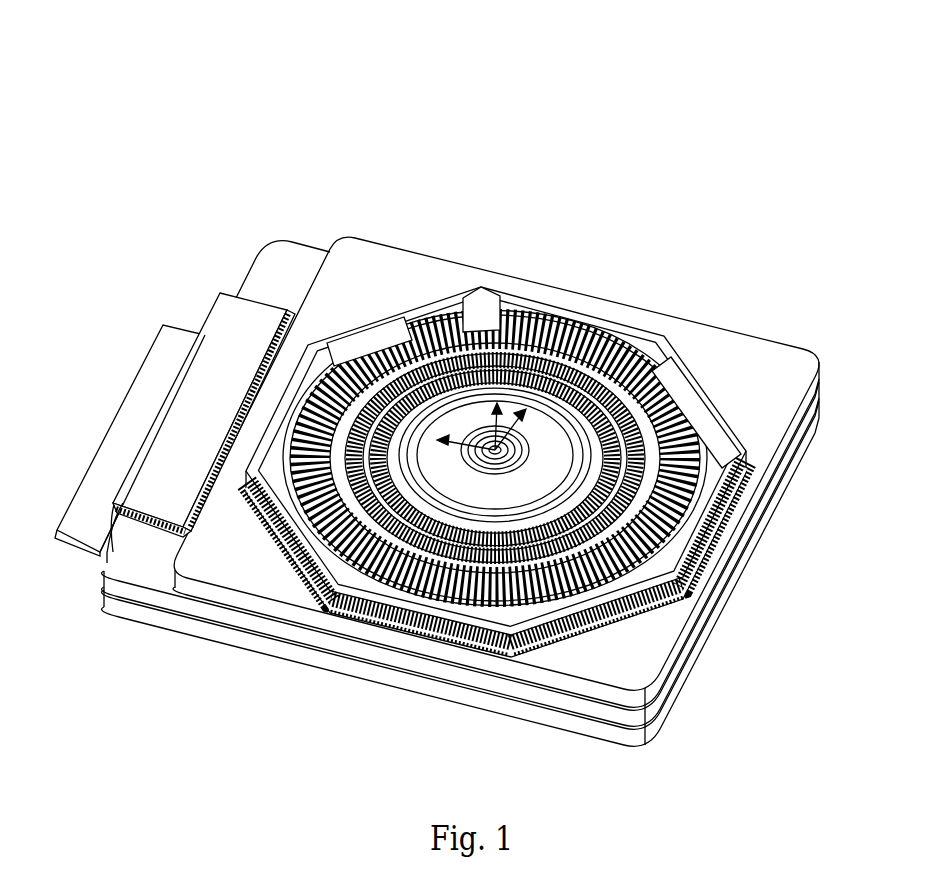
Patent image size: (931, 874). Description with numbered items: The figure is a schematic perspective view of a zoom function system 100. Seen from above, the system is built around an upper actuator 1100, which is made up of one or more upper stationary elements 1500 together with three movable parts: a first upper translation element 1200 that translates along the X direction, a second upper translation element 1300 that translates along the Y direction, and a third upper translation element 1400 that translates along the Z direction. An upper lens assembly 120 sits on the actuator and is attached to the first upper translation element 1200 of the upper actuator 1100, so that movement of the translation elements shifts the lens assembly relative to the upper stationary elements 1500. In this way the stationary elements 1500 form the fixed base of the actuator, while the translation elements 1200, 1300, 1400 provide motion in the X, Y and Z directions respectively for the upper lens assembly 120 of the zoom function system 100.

The zoom function system 100 is at (132, 104).
The upper lens assembly 120 is at (343, 375).
The upper actuator 1100 is at (610, 407).
The first upper translation element 1200 is at (535, 337).
The second upper translation element 1300 is at (470, 335).
The third upper translation element 1400 is at (493, 382).
The upper stationary elements 1500 is at (355, 578).